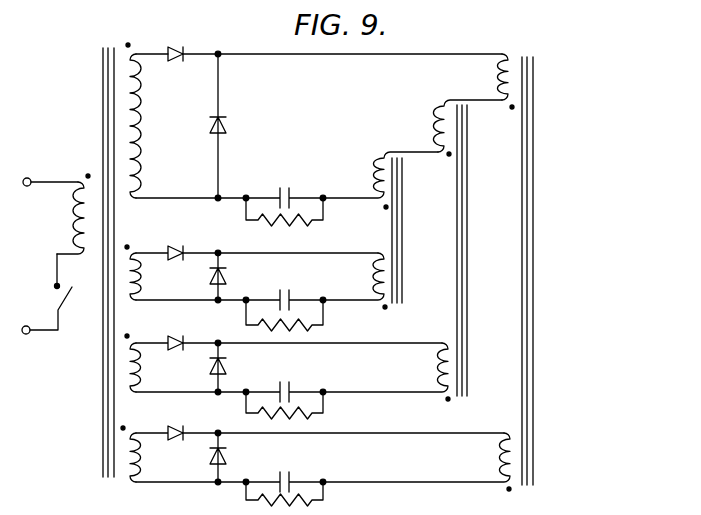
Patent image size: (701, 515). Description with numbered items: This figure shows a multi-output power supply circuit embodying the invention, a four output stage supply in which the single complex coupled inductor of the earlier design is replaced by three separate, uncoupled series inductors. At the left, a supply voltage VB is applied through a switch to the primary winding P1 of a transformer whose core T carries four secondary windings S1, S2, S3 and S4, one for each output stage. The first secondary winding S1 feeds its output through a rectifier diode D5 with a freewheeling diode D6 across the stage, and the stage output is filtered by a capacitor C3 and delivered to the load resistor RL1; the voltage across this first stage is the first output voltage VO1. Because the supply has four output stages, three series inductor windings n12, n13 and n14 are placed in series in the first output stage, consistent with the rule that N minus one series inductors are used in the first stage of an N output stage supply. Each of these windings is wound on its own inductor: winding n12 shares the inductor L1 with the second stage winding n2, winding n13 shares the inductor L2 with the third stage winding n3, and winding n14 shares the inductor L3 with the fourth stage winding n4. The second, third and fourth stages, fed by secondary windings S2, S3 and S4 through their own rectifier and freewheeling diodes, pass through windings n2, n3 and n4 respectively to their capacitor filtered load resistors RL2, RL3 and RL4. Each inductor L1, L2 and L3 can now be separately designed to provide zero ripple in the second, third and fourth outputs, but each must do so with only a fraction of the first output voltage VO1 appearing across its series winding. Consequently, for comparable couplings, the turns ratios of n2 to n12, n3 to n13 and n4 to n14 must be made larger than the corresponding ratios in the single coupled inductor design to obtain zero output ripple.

The transformer core T is at (107, 275).
The supply voltage terminal VB is at (49, 256).
The primary winding P1 is at (74, 224).
The secondary winding 1 S1 is at (142, 153).
The secondary winding 2 S2 is at (141, 277).
The secondary winding 3 S3 is at (141, 367).
The secondary winding 4 S4 is at (141, 457).
The diode D5 is at (183, 59).
The diode D6 is at (211, 135).
The capacitor C3 is at (282, 195).
The load resistor 1 RL1 is at (316, 222).
The load resistor 2 RL2 is at (316, 326).
The load resistor 3 RL3 is at (316, 414).
The load resistor 4 RL4 is at (302, 496).
The first output voltage VO1 is at (323, 242).
The series inductor winding n12 is at (376, 174).
The series inductor winding n13 is at (436, 115).
The series inductor winding n14 is at (500, 84).
The second output winding n2 is at (374, 280).
The third output winding n3 is at (436, 371).
The fourth output winding n4 is at (500, 462).
The inductor L1 is at (403, 245).
The inductor L2 is at (463, 268).
The inductor L3 is at (529, 286).